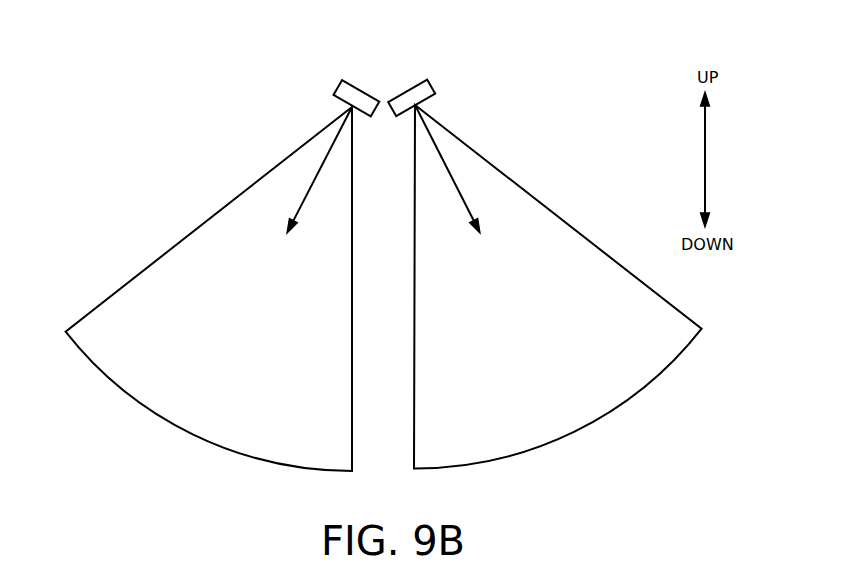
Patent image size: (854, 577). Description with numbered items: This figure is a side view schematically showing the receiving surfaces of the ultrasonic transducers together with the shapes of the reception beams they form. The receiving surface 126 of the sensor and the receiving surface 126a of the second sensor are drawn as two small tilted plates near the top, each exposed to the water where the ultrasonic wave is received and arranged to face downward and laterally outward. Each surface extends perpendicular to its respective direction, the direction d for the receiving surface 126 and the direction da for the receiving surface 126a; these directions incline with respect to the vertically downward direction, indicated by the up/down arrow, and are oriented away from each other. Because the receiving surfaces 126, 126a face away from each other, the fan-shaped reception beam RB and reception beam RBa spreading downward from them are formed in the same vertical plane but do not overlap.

The receiving surface 126a is at (342, 81).
The receiving surface 126 is at (428, 80).
The reception beam RBa is at (232, 200).
The reception beam RB is at (543, 203).
The direction da is at (308, 184).
The direction d is at (456, 183).